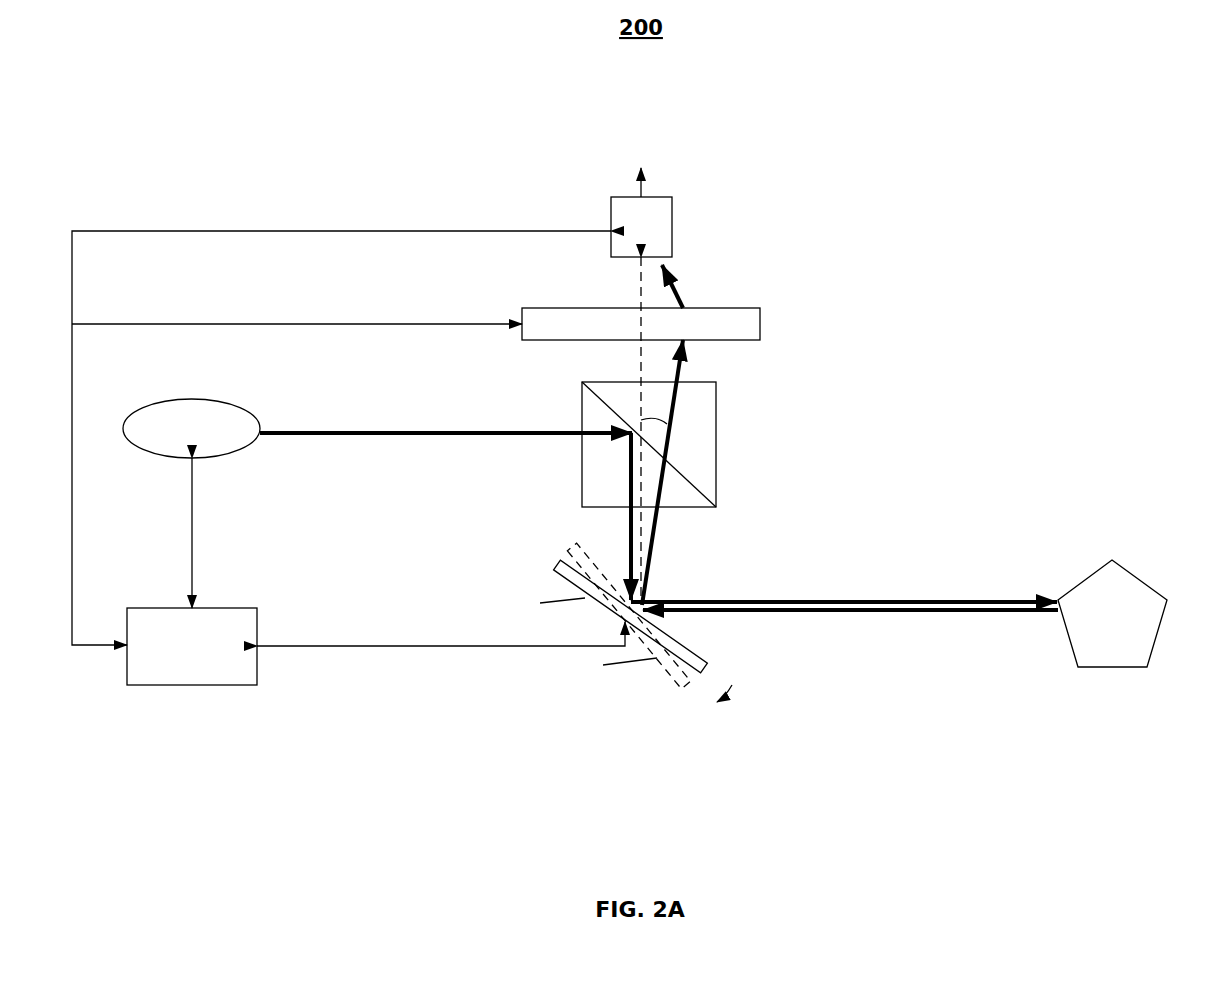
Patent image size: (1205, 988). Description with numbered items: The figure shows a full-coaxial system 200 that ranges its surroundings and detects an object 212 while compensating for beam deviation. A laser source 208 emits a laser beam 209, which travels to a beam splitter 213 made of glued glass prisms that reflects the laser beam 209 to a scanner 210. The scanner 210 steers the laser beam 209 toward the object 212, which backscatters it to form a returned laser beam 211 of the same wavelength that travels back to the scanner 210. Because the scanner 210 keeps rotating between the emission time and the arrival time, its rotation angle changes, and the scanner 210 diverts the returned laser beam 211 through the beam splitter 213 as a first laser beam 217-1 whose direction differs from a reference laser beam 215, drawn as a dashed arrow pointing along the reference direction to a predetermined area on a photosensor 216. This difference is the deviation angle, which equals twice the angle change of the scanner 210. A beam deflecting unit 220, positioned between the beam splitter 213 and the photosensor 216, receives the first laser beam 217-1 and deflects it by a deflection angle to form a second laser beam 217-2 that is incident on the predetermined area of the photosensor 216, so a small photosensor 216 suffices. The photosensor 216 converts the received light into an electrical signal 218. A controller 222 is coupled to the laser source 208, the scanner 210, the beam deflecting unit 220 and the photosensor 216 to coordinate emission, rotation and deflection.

The full-coaxial system 200 is at (619, 426).
The laser source 208 is at (192, 398).
The laser beam 209 is at (340, 433).
The scanner 210 is at (518, 570).
The returned laser beam 211 is at (797, 612).
The object 212 is at (1112, 613).
The beam splitter 213 is at (716, 390).
The reference laser beam 215 is at (641, 367).
The photosensor 216 is at (672, 210).
The first laser beam 217-1 is at (648, 567).
The second laser beam 217-2 is at (678, 282).
The electrical signal 218 is at (641, 166).
The beam deflecting unit 220 is at (738, 308).
The controller 222 is at (192, 646).